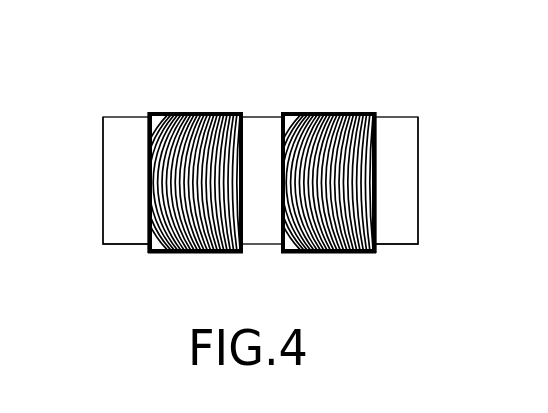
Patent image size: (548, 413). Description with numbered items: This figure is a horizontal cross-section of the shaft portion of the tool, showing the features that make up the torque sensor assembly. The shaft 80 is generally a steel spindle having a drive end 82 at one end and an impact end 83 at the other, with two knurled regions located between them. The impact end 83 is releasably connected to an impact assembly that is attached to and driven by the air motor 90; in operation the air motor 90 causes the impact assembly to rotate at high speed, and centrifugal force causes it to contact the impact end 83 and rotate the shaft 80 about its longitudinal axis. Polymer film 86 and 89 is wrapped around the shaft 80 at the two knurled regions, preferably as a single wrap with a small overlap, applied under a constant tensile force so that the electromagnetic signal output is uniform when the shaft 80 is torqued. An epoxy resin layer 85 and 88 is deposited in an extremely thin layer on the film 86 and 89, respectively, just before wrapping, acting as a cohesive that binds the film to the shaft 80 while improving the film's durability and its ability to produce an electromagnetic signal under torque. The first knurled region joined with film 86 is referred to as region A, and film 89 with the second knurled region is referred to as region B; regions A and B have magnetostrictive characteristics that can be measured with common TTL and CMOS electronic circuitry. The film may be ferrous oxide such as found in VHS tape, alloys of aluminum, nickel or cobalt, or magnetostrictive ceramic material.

The shaft 80 is at (276, 76).
The drive end 82 is at (418, 186).
The impact end 83 is at (103, 181).
The epoxy resin layer 85 is at (148, 116).
The polymer film 86 is at (187, 112).
The epoxy resin layer 88 is at (377, 116).
The polymer film 89 is at (325, 112).
The air motor 90 is at (178, 253).
The region A is at (165, 253).
The region B is at (362, 253).